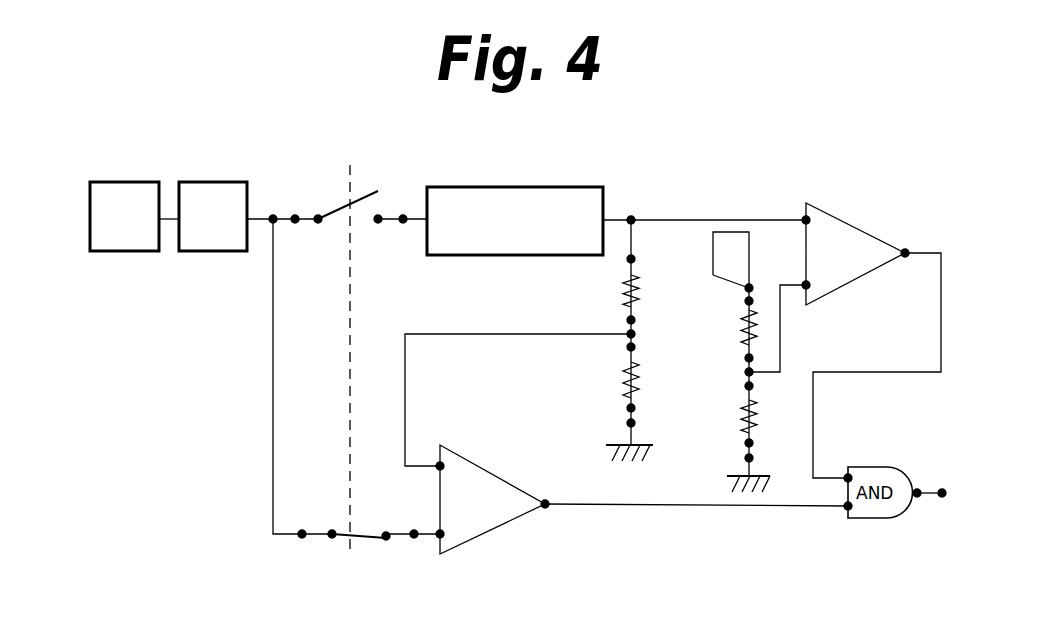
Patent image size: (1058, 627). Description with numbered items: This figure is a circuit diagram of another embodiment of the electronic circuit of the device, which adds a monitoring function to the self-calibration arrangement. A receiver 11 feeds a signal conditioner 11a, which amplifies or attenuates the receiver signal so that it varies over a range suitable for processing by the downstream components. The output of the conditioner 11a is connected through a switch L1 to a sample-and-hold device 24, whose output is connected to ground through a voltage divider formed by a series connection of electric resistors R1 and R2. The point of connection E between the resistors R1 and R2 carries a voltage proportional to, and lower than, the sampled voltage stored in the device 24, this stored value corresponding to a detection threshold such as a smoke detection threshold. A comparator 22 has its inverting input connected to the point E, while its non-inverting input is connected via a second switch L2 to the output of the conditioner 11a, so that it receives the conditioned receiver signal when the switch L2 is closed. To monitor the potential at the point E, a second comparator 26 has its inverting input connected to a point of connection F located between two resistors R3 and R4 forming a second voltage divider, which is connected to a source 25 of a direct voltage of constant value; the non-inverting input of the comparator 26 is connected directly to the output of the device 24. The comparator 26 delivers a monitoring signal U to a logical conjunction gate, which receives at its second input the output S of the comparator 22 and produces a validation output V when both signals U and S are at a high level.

The receiver 11 is at (115, 251).
The signal conditioner 11a is at (192, 251).
The sample-and-hold device 24 is at (517, 187).
The comparator 22 is at (500, 518).
The second comparator 26 is at (860, 235).
The source of direct voltage 25 is at (712, 236).
The electric resistor R1 is at (640, 290).
The electric resistor R2 is at (640, 385).
The resistor R3 is at (742, 330).
The resistor R4 is at (742, 417).
The point of connection E is at (640, 337).
The point of connection F is at (746, 372).
The output signal of comparator S is at (730, 508).
The monitoring signal U is at (900, 372).
The validation output V is at (940, 495).
The switch L1 is at (333, 215).
The second switch L2 is at (340, 540).